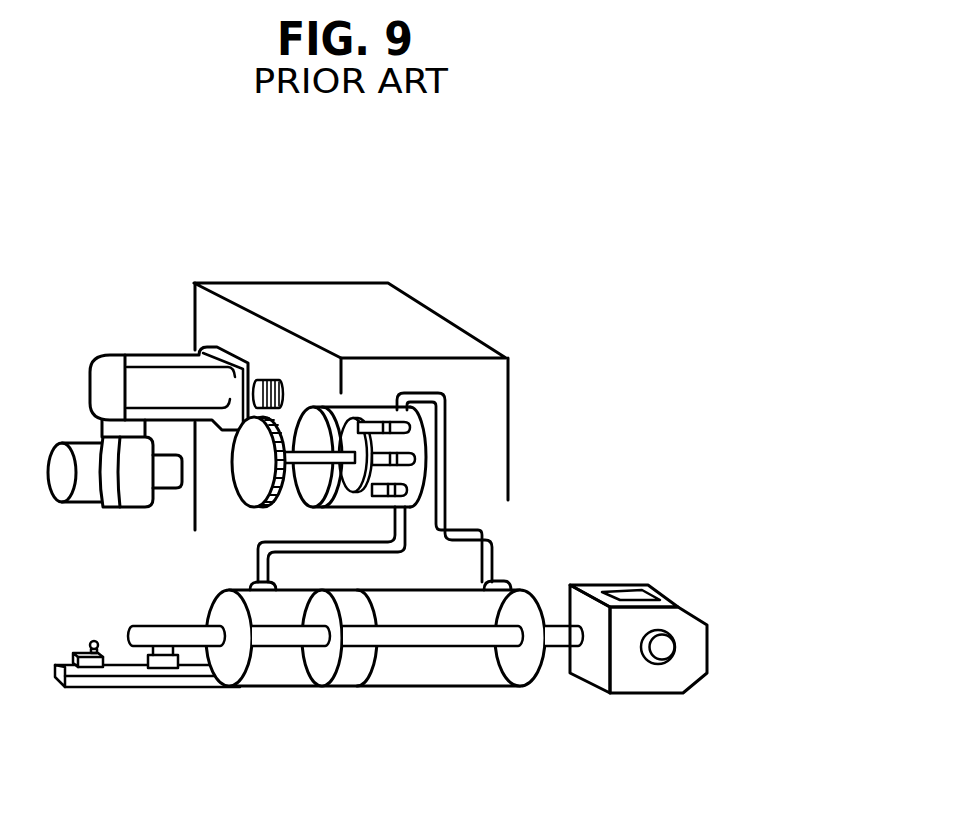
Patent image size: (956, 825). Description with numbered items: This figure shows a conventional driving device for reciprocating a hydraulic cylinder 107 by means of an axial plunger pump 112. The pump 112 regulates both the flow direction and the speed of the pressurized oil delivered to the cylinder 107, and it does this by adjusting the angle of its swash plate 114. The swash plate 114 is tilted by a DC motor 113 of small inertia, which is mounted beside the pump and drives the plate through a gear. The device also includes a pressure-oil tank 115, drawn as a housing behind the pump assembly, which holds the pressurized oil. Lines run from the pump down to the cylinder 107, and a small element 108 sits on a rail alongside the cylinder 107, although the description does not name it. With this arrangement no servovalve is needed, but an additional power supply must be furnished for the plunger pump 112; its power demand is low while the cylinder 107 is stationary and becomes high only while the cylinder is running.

The hydraulic cylinder 107 is at (311, 688).
The sensor 108 is at (94, 641).
The axial plunger pump 112 is at (428, 408).
The DC motor 113 is at (70, 443).
The swash plate 114 is at (360, 420).
The pressure-oil tank 115 is at (286, 283).